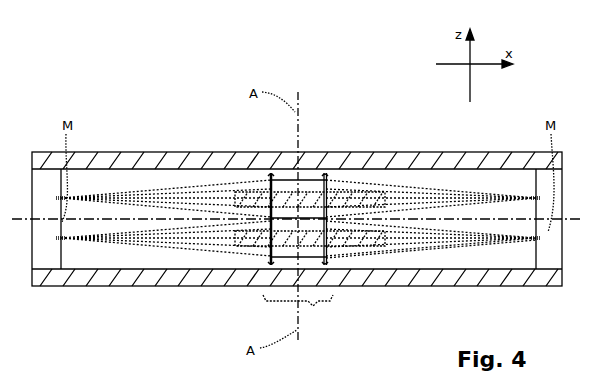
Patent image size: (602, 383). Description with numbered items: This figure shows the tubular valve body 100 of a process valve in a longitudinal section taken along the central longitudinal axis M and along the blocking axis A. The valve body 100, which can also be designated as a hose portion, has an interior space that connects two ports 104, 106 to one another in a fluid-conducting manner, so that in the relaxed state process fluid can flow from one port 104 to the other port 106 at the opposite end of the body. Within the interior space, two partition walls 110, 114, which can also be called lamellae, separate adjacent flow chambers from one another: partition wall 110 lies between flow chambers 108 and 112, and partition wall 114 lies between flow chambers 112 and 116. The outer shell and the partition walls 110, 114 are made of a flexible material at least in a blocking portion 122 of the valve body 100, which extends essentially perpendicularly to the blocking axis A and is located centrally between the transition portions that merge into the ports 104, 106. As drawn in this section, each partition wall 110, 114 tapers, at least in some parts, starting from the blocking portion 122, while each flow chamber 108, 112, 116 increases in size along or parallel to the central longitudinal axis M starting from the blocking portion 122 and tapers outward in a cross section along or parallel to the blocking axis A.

The valve body 100 is at (134, 110).
The port 104 is at (40, 164).
The port 106 is at (550, 287).
The flow chamber 108 is at (215, 176).
The partition wall 110 is at (357, 197).
The flow chamber 112 is at (303, 216).
The partition wall 114 is at (240, 245).
The flow chamber 116 is at (410, 262).
The blocking portion 122 is at (298, 309).